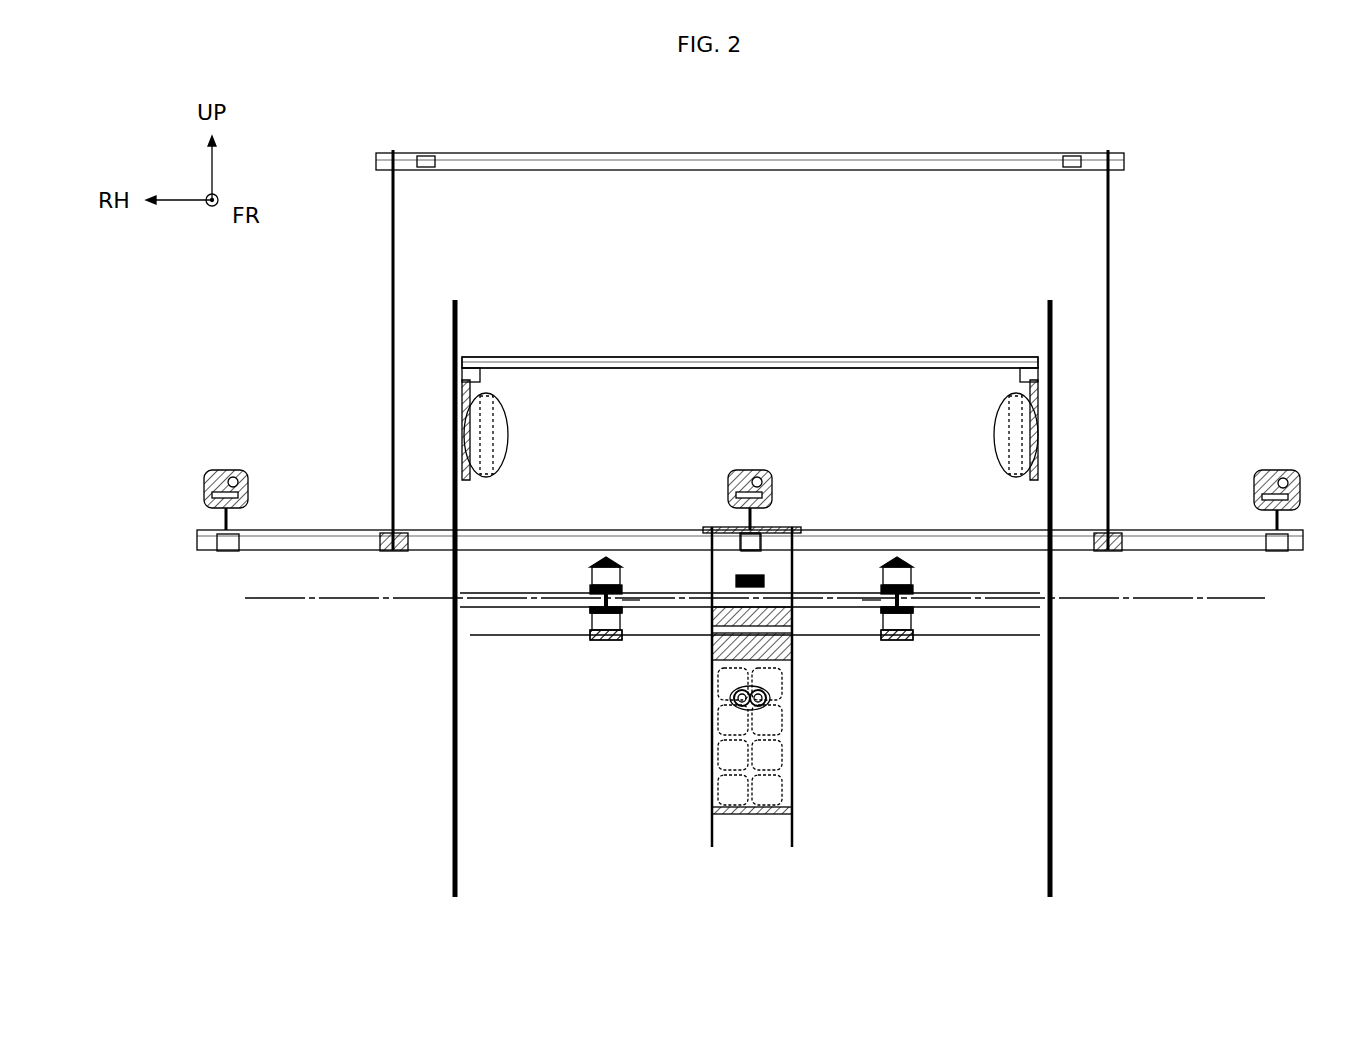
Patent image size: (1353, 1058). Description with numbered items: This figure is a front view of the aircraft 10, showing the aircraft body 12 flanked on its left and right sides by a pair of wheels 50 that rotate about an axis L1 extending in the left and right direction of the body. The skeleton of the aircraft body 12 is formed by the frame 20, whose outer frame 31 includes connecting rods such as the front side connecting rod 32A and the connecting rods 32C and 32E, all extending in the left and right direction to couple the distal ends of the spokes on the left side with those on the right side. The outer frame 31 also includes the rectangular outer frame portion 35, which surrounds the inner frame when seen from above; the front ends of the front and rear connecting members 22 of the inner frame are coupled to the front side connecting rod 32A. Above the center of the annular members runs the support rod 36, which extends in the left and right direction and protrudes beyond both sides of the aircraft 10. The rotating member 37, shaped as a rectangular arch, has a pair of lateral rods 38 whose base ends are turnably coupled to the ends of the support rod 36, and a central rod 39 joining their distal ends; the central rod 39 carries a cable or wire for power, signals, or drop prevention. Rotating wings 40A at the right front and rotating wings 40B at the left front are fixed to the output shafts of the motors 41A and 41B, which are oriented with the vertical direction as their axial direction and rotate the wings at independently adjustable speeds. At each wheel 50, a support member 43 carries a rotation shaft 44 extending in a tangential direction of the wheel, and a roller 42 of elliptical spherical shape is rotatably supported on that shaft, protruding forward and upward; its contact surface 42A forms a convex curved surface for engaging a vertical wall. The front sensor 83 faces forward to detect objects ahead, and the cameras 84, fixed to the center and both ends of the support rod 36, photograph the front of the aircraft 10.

The aircraft 10 is at (843, 122).
The aircraft body 12 is at (831, 863).
The frame 20 is at (755, 356).
The front and rear connecting members 22 is at (623, 602).
The outer frame 31 is at (657, 845).
The front side connecting rod 32A is at (532, 593).
The connecting rod 32C is at (554, 357).
The connecting rod 32E is at (546, 840).
The outer frame portion 35 is at (485, 607).
The support rod 36 is at (664, 530).
The rotating member 37 is at (697, 149).
The lateral rods 38 is at (393, 295).
The central rod 39 is at (960, 151).
The rotating wings 40A is at (606, 558).
The rotating wings 40B is at (896, 558).
The motor 41A is at (588, 567).
The motor 41B is at (913, 576).
The rollers 42 is at (510, 418).
The contact surface 42A is at (498, 449).
The support members 43 is at (480, 366).
The rotation shaft 44 is at (462, 411).
The wheels 50 is at (455, 298).
The front sensor 83 is at (734, 704).
The cameras 84 is at (227, 468).
The axis L1 is at (1169, 600).